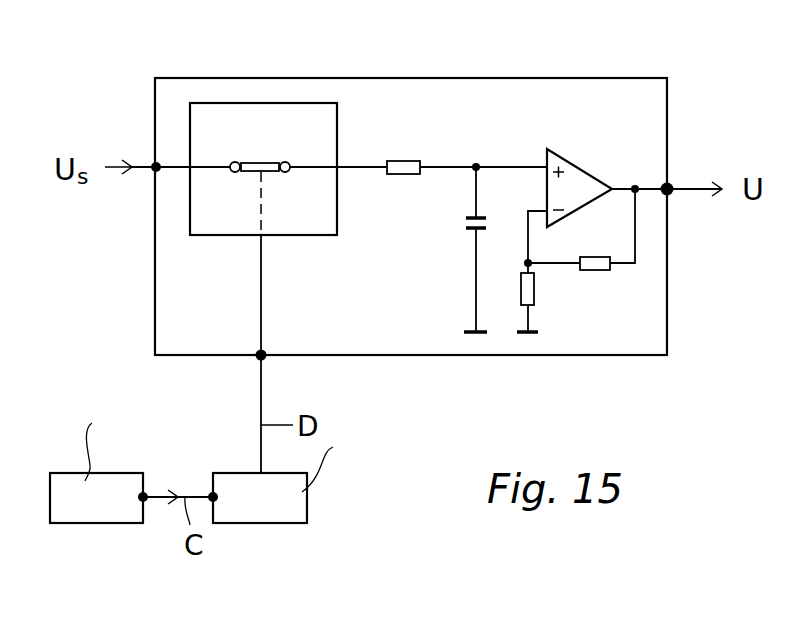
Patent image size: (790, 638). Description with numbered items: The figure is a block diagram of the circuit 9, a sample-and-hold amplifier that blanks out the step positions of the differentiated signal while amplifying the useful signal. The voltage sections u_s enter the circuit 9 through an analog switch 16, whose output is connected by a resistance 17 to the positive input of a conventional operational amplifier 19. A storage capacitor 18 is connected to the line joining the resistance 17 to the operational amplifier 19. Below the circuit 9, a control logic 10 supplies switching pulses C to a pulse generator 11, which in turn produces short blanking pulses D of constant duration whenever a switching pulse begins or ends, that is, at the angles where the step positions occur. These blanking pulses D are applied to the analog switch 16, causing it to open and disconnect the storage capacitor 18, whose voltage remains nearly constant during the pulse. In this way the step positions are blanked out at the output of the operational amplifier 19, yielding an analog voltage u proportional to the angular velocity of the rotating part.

The circuit 9 is at (155, 117).
The control logic 10 is at (82, 523).
The pulse generator 11 is at (307, 518).
The analog switch 16 is at (302, 115).
The resistance 17 is at (402, 161).
The storage capacitor 18 is at (467, 233).
The operational amplifier 19 is at (597, 176).